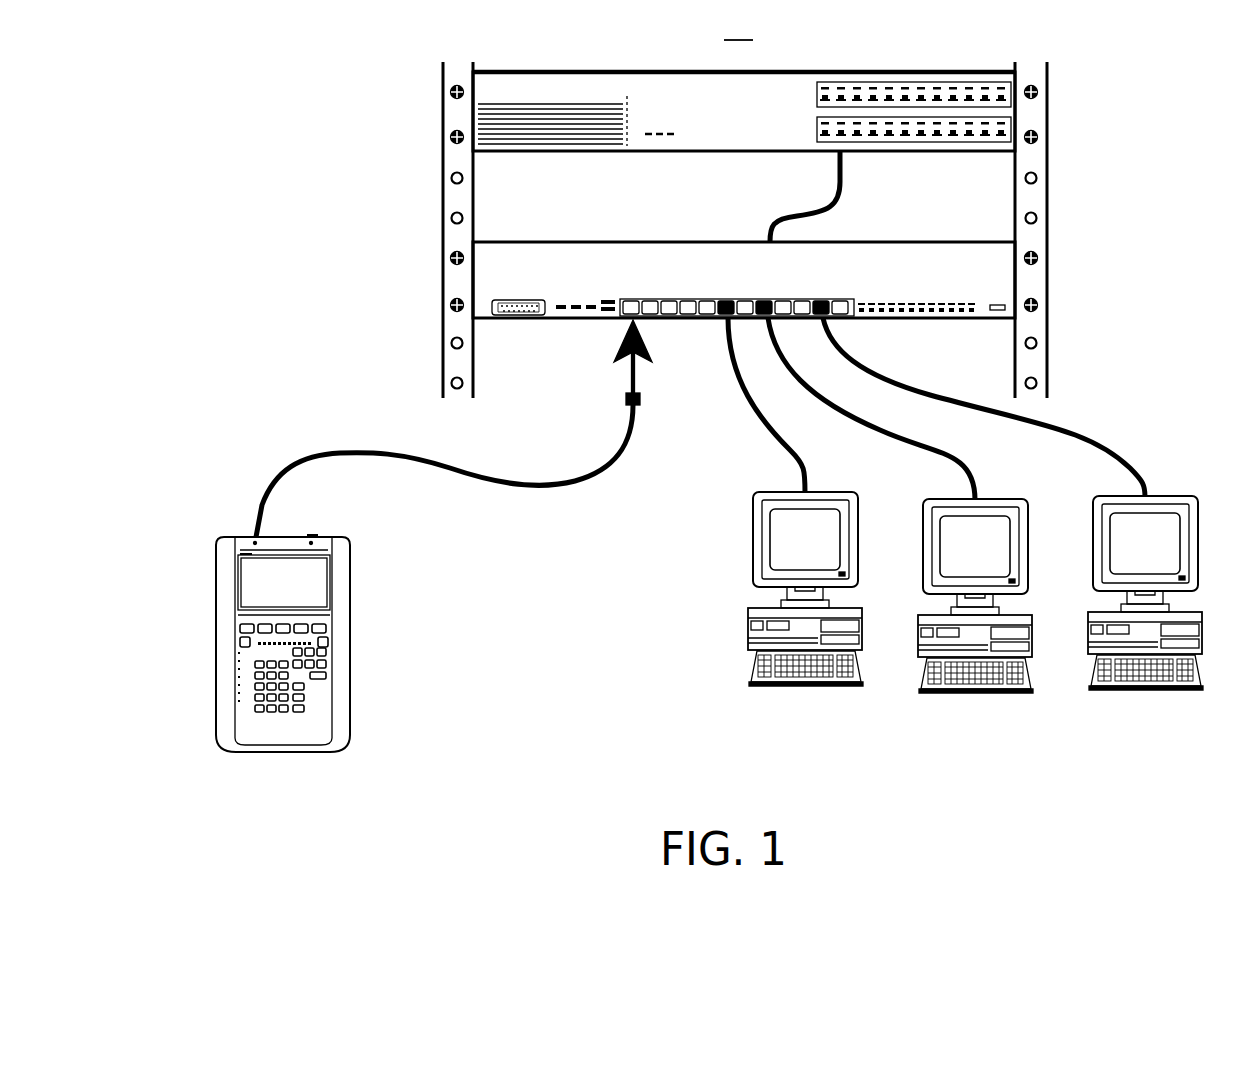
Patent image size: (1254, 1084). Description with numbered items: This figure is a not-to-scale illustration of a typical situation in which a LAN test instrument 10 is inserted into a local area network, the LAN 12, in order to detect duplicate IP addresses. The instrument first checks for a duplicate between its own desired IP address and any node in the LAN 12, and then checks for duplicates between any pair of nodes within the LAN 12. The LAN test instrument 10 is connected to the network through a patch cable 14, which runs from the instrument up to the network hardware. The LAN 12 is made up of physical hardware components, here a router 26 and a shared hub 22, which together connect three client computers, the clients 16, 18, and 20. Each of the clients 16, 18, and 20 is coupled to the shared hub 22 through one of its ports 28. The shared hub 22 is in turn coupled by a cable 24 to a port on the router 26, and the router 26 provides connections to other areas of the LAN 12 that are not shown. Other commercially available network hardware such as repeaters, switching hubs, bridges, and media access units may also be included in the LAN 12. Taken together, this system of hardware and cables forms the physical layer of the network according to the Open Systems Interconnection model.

The LAN test instrument 10 is at (348, 535).
The LAN 12 is at (744, 84).
The patch cable 14 is at (467, 470).
The client 16 is at (826, 493).
The client 18 is at (995, 498).
The client 20 is at (1168, 497).
The shared hub 22 is at (878, 242).
The cable 24 is at (768, 222).
The router 26 is at (902, 72).
The ports 28 is at (756, 275).